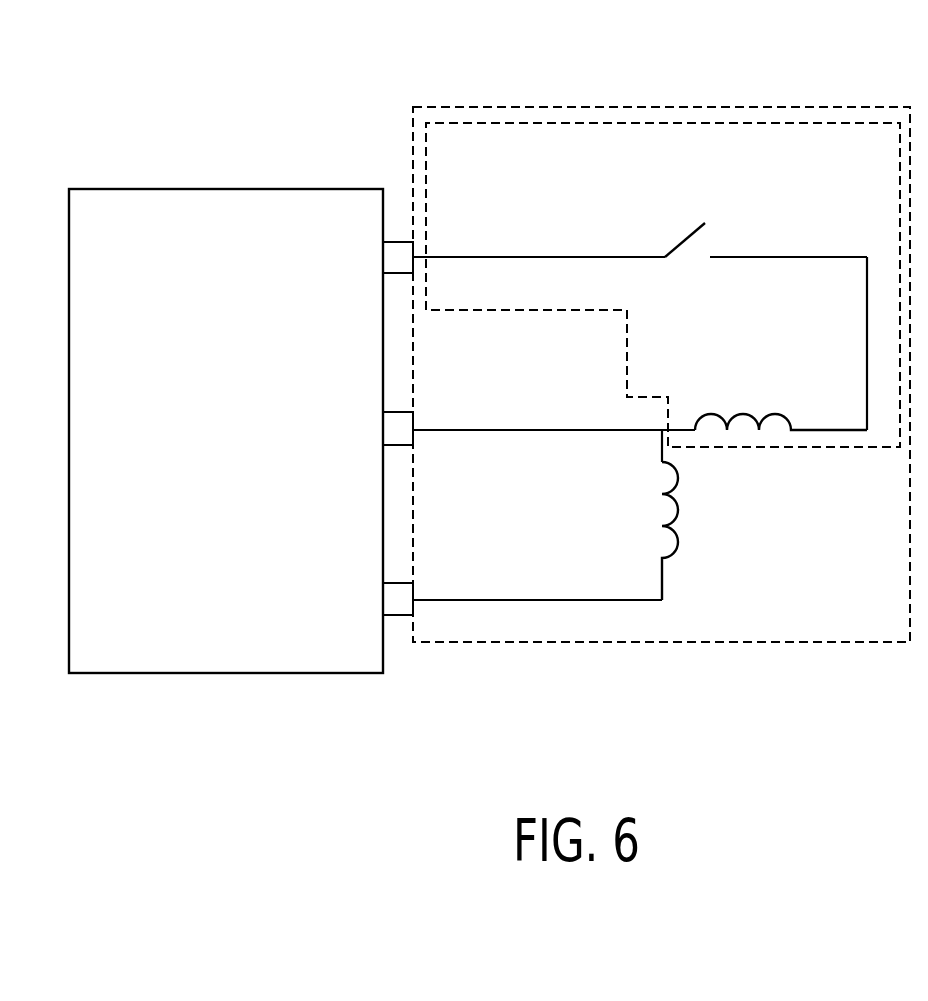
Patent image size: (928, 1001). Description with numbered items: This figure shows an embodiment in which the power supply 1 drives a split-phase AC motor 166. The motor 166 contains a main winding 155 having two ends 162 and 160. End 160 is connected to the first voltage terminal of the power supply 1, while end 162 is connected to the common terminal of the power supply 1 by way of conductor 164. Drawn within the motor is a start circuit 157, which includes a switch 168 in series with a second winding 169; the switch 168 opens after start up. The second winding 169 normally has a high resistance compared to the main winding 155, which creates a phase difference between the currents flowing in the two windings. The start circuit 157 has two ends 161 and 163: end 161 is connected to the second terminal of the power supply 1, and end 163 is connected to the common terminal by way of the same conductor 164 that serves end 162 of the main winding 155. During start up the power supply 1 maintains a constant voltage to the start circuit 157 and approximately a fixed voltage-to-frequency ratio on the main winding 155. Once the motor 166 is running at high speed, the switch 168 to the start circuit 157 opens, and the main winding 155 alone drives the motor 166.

The power supply 1 is at (215, 493).
The main winding 155 is at (678, 538).
The start circuit 157 is at (713, 125).
The end 160 is at (430, 598).
The end 161 is at (437, 258).
The end 162 is at (657, 446).
The end 163 is at (678, 432).
The conductor 164 is at (503, 430).
The split-phase AC motor 166 is at (727, 645).
The switch 168 is at (681, 237).
The second winding 169 is at (775, 412).